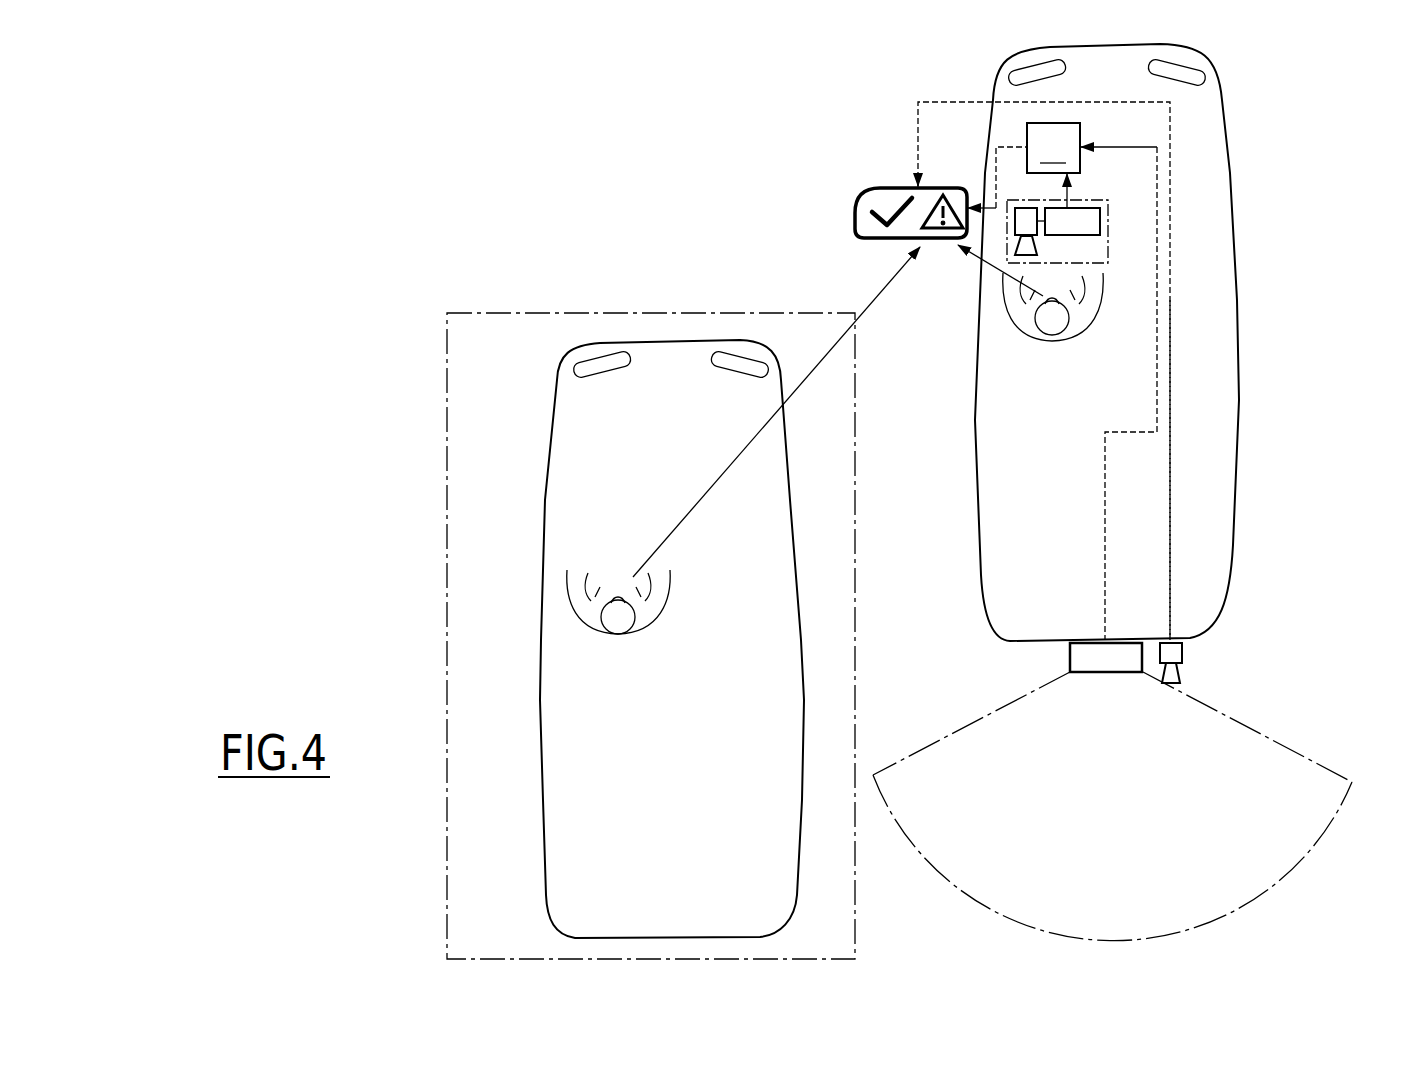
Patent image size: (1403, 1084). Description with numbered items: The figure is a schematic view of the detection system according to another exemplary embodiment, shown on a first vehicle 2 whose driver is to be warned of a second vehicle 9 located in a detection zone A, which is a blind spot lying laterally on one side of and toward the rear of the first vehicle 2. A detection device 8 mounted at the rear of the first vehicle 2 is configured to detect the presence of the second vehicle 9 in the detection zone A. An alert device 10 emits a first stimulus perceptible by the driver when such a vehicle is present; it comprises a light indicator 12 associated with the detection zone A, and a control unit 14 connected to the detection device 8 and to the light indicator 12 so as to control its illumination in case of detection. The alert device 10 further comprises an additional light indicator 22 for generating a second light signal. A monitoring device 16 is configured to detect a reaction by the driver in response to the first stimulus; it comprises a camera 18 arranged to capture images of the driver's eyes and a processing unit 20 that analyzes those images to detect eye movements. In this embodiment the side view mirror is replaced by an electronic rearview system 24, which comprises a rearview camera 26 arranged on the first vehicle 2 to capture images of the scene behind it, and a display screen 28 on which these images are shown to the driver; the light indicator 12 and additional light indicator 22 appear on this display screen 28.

The first vehicle 2 is at (1243, 375).
The detection device 8 is at (1090, 655).
The second vehicle 9 is at (535, 730).
The alert device 10 is at (905, 150).
The light indicator 12 is at (878, 191).
The control unit 14 is at (1053, 148).
The monitoring device 16 is at (1122, 218).
The camera 18 is at (1040, 232).
The processing unit 20 is at (1085, 216).
The additional light indicator 22 is at (858, 222).
The electronic rearview system 24 is at (1176, 476).
The rearview camera 26 is at (1177, 650).
The display screen 28 is at (868, 240).
The detection zone A is at (526, 312).